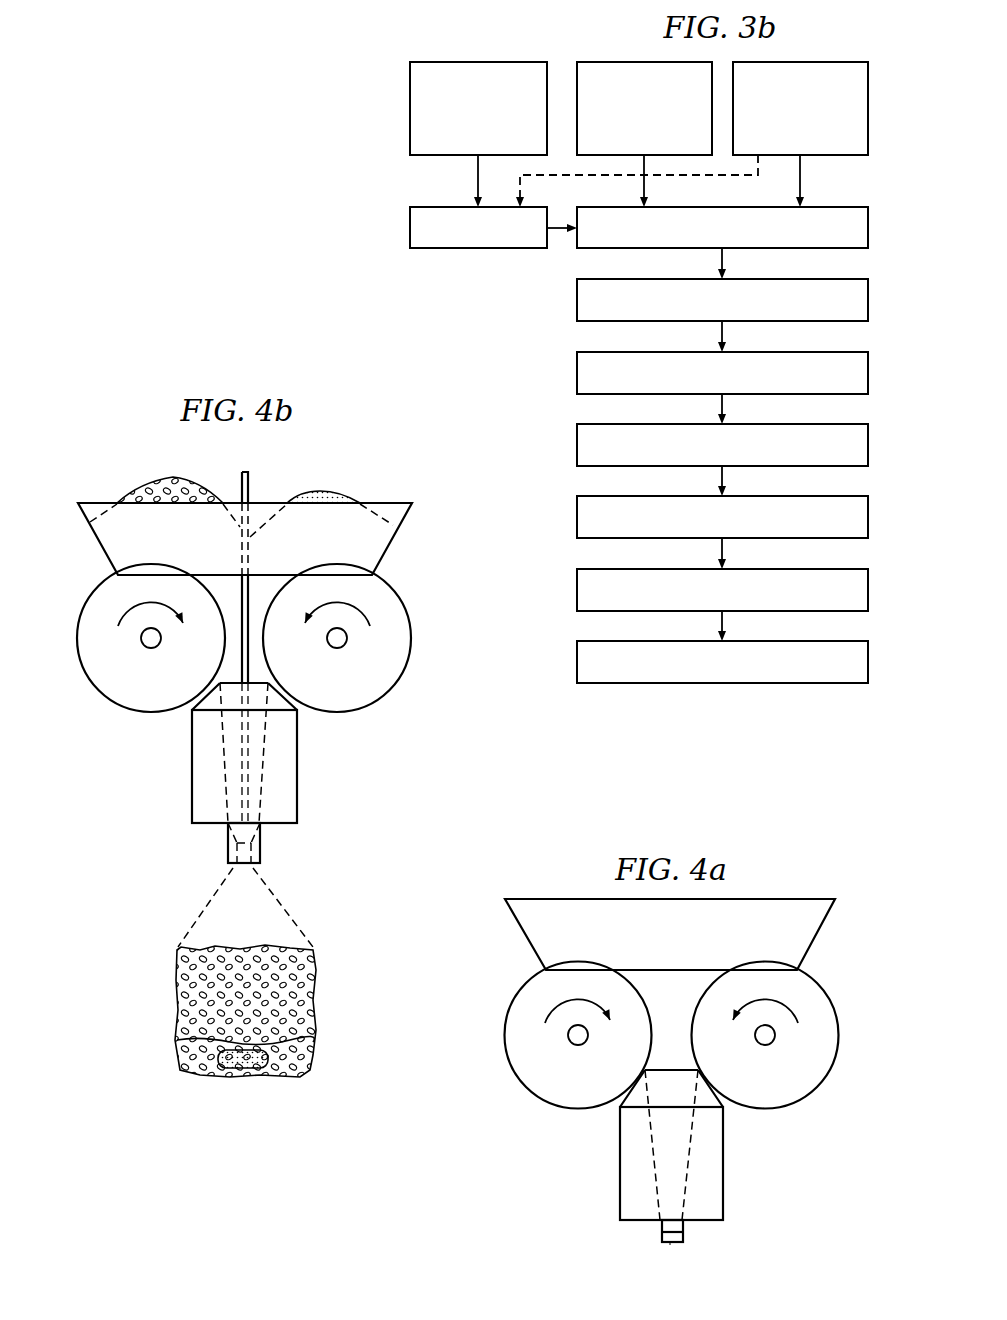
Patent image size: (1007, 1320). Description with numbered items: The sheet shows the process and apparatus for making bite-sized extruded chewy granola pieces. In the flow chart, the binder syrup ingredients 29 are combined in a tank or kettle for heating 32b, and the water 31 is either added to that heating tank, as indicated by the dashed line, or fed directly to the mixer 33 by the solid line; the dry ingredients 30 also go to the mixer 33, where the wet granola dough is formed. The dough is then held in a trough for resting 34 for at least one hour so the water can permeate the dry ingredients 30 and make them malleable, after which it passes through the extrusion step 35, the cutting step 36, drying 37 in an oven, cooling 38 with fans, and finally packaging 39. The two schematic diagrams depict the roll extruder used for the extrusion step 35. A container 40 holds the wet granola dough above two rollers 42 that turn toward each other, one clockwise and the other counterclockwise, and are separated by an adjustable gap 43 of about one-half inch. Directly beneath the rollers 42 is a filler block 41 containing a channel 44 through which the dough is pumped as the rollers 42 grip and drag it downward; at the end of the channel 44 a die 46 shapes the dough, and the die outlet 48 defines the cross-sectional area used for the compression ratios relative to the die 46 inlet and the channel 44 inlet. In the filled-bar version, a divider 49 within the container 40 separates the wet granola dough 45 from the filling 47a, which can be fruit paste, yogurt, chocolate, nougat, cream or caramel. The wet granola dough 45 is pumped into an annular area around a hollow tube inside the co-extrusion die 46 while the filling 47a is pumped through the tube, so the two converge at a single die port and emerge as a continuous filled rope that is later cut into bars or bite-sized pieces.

In FIG. 3b, the binder syrup ingredients 29 is at (410, 108).
In FIG. 3b, the dry ingredients 30 is at (615, 62).
In FIG. 3b, the water 31 is at (822, 62).
In FIG. 3b, the heating 32b is at (410, 228).
In FIG. 3b, the mixer 33 is at (577, 244).
In FIG. 3b, the resting 34 is at (577, 301).
In FIG. 3b, the extrusion step 35 is at (577, 374).
In FIG. 3b, the cutting step 36 is at (577, 446).
In FIG. 3b, the drying 37 is at (577, 518).
In FIG. 3b, the cooling 38 is at (577, 591).
In FIG. 3b, the packaging 39 is at (577, 663).
In FIG. 4b, the container 40 is at (100, 540).
In FIG. 4a, the container 40 is at (525, 938).
In FIG. 4b, the filler block 41 is at (297, 793).
In FIG. 4a, the filler block 41 is at (724, 1192).
In FIG. 4b, the rollers 42 is at (380, 698).
In FIG. 4a, the rollers 42 is at (832, 1077).
In FIG. 4b, the gap 43 is at (253, 617).
In FIG. 4a, the gap 43 is at (670, 1017).
In FIG. 4b, the channel 44 is at (223, 741).
In FIG. 4a, the channel 44 is at (655, 1137).
In FIG. 4b, the wet granola dough 45 is at (150, 485).
In FIG. 4b, the die 46 is at (228, 845).
In FIG. 4a, the die 46 is at (662, 1235).
In FIG. 4b, the filling 47a is at (325, 493).
In FIG. 4a, the die outlet 48 is at (672, 1245).
In FIG. 4b, the divider 49 is at (250, 474).